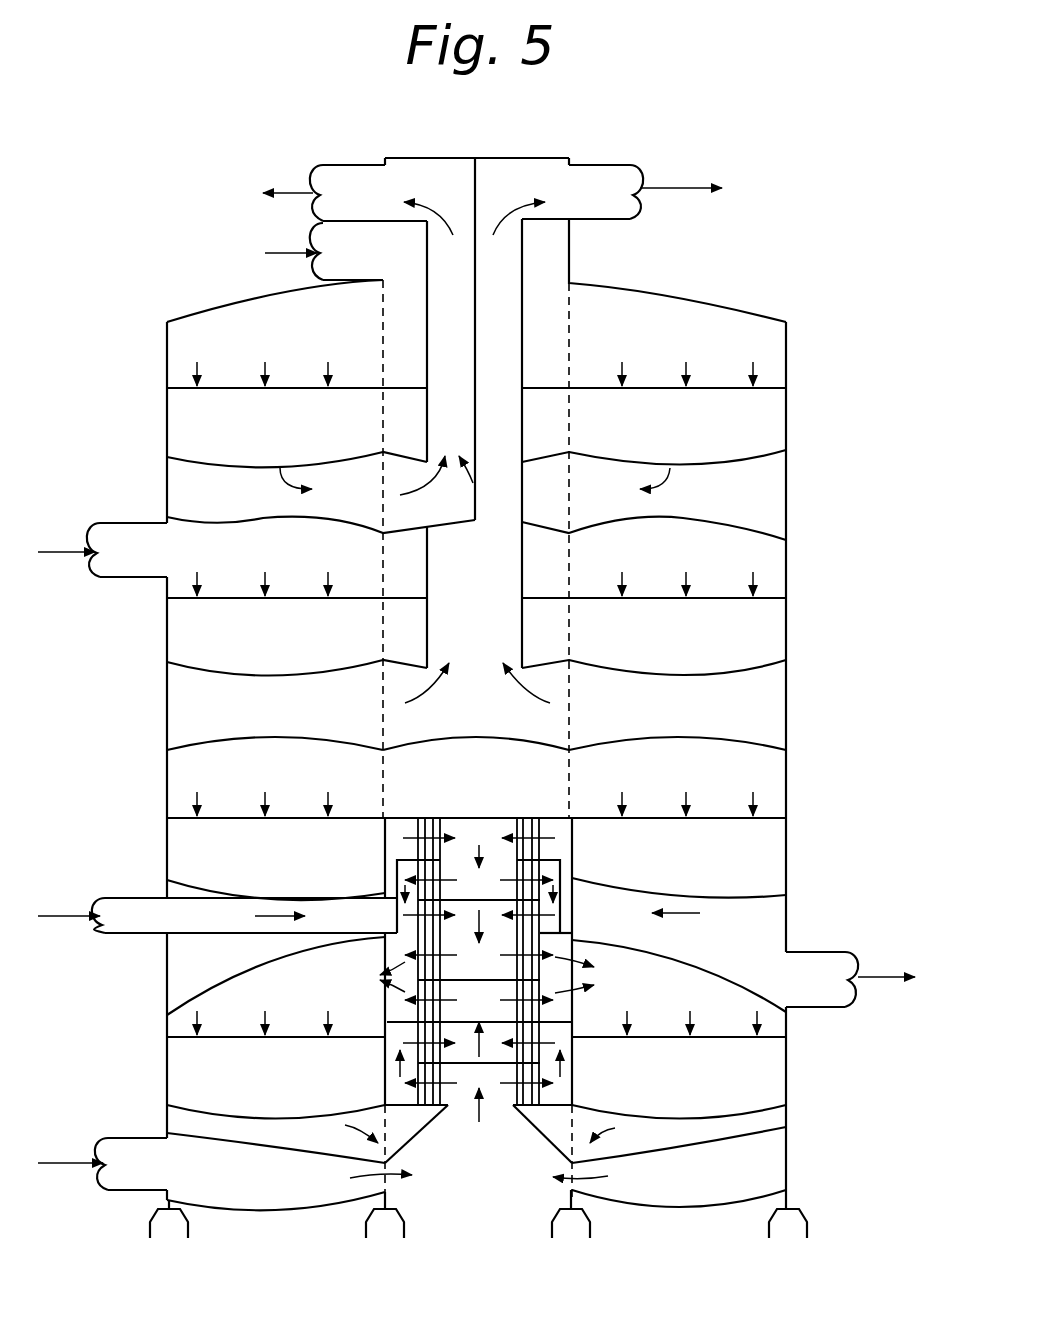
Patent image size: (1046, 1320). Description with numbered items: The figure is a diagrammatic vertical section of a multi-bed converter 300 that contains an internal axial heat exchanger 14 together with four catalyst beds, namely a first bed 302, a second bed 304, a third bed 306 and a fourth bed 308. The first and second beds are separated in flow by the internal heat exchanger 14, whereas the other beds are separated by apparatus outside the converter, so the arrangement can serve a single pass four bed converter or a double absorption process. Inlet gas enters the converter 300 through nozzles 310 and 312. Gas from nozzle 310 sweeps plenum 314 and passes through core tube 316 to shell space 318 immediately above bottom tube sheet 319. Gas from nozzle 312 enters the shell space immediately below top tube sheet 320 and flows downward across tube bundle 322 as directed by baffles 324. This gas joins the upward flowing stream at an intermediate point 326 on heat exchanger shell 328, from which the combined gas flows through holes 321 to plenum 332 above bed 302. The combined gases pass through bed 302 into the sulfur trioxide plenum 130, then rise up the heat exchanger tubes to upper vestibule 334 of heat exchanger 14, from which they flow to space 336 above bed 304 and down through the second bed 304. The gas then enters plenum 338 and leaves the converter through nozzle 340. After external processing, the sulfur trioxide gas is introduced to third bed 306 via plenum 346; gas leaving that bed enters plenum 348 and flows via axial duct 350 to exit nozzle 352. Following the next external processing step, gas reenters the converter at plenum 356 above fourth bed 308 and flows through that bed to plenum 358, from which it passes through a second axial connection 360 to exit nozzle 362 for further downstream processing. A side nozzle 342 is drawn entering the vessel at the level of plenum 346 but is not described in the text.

The multi-bed converter 300 is at (698, 292).
The exit nozzle 362 is at (351, 165).
The converter plenum 356 is at (278, 340).
The exit nozzle 352 is at (596, 165).
The second axial connection 360 is at (458, 316).
The axial duct 350 is at (488, 577).
The fourth catalyst bed 308 is at (258, 428).
The plenum 346 is at (270, 546).
The plenum 358 is at (695, 496).
The inlet pipe 342 is at (126, 522).
The third catalyst bed 306 is at (275, 628).
The space above bed 304 336 is at (268, 760).
The upper vestibule 334 is at (484, 748).
The plenum 348 is at (335, 713).
The second catalyst bed 304 is at (265, 853).
The plenum 338 is at (770, 893).
The top tube sheet 320 is at (405, 806).
The internal axial heat exchanger 14 is at (505, 816).
The shell space 318 is at (479, 916).
The baffles 324 is at (512, 893).
The tube bundle 322 is at (530, 965).
The intermediate point 326 is at (376, 987).
The holes 321 is at (578, 972).
The heat exchanger shell 328 is at (576, 1005).
The inlet nozzle 312 is at (132, 938).
The plenum 332 is at (247, 996).
The outlet nozzle 340 is at (822, 950).
The first catalyst bed 302 is at (265, 1058).
The sulfur trioxide plenum 130 is at (790, 1115).
The core tube 316 is at (447, 1108).
The bottom tube sheet 319 is at (498, 1108).
The inlet nozzle 310 is at (131, 1135).
The plenum 314 is at (258, 1176).